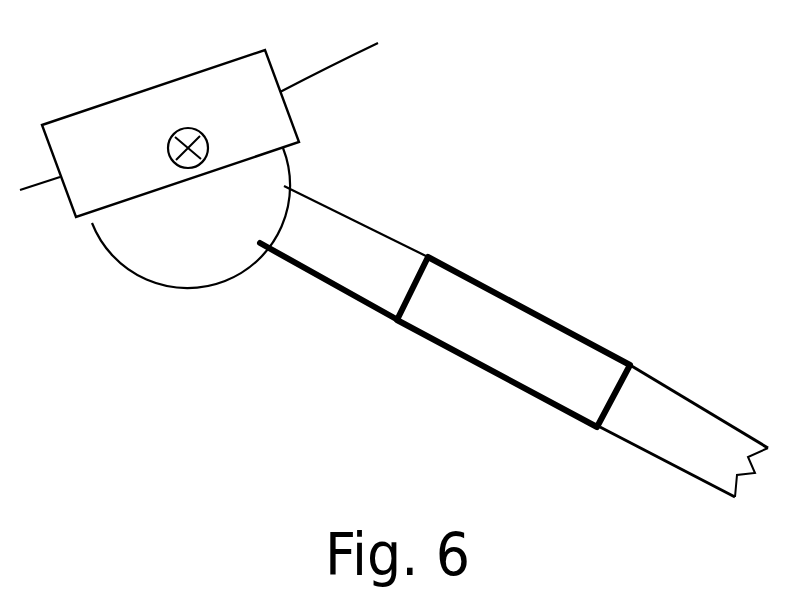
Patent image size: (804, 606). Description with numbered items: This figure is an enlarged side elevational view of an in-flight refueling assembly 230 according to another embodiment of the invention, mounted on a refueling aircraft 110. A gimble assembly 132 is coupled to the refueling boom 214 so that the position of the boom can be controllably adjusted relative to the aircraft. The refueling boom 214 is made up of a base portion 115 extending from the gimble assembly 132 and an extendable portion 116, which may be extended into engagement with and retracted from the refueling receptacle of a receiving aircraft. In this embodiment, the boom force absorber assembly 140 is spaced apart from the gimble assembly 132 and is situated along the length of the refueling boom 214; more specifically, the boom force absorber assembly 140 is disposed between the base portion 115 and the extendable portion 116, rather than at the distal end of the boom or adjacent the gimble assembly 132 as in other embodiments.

The refueling aircraft 110 is at (352, 58).
The gimble assembly 132 is at (135, 87).
The base portion 115 is at (397, 242).
The boom force absorber assembly 140 is at (437, 347).
The extendable portion 116 is at (663, 385).
The in-flight refueling assembly 230 is at (158, 360).
The refueling boom 214 is at (370, 440).